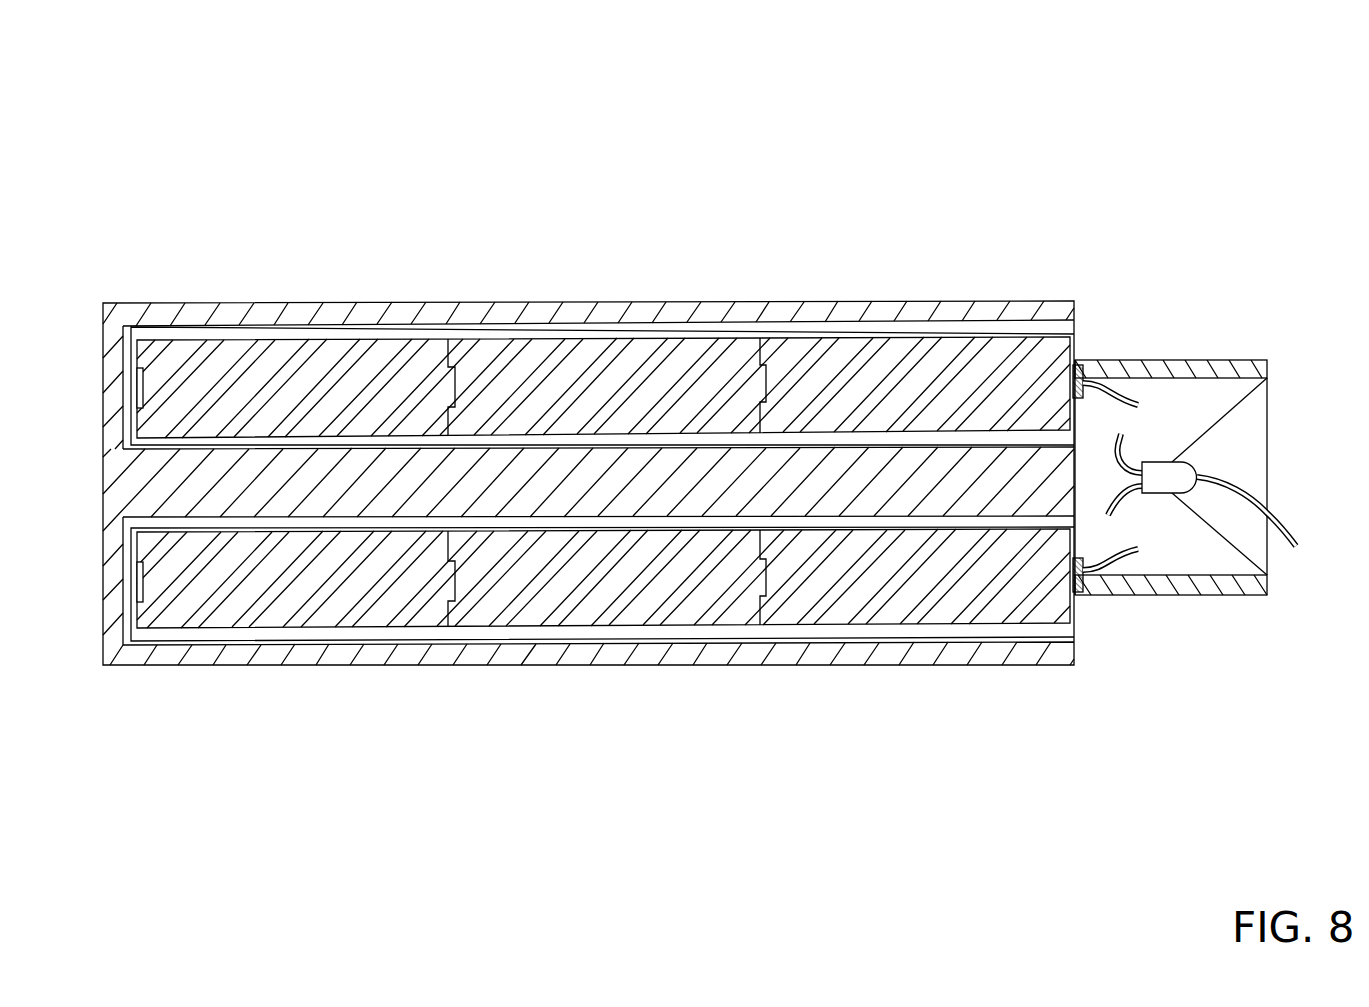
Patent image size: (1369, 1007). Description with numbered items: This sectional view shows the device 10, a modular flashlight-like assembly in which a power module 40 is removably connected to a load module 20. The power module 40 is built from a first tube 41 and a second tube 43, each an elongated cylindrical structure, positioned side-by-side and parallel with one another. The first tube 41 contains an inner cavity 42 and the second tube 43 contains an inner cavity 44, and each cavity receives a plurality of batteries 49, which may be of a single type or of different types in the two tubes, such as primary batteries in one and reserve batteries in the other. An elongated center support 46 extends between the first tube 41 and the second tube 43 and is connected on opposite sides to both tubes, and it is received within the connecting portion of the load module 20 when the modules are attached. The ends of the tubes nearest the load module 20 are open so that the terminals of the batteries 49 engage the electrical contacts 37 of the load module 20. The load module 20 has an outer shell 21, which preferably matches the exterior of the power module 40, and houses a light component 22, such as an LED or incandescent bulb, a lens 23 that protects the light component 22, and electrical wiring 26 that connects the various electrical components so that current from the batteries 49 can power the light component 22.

The device 10 is at (1162, 112).
The load module 20 is at (1196, 644).
The outer shell 21 is at (1203, 360).
The light component 22 is at (1295, 545).
The lens 23 is at (1268, 423).
The electrical wiring 26 is at (1136, 403).
The electrical contacts 37 is at (1083, 365).
The power module 40 is at (678, 252).
The first tube 41 is at (615, 652).
The inner cavity 42 is at (448, 637).
The second tube 43 is at (513, 310).
The inner cavity 44 is at (563, 330).
The center support 46 is at (315, 472).
The batteries 49 is at (893, 358).